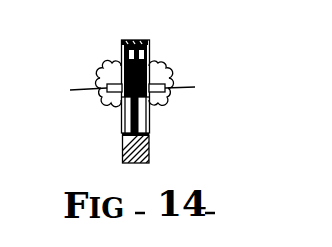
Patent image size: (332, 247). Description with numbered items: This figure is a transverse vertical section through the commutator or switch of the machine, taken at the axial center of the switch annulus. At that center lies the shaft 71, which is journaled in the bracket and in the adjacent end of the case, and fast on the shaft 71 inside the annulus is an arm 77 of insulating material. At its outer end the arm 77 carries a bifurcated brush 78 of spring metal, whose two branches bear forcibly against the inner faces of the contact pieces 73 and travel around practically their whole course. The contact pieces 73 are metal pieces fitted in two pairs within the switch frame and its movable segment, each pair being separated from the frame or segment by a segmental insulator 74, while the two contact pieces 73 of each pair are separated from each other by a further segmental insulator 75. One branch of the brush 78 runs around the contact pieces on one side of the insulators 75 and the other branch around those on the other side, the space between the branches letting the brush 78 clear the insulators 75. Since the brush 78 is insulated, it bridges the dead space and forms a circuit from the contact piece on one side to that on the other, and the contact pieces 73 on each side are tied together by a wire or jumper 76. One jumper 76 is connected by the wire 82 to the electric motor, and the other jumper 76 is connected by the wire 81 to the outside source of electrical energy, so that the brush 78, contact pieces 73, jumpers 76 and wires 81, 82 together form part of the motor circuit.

The shaft 71 is at (154, 99).
The contact pieces 73 is at (122, 47).
The segmental insulators 74 is at (131, 40).
The segmental insulator 75 is at (123, 140).
The wire or jumper 76 is at (161, 77).
The arm 77 is at (155, 57).
The bifurcated brush 78 is at (127, 54).
The wire 81 is at (71, 91).
The wire 82 is at (196, 87).